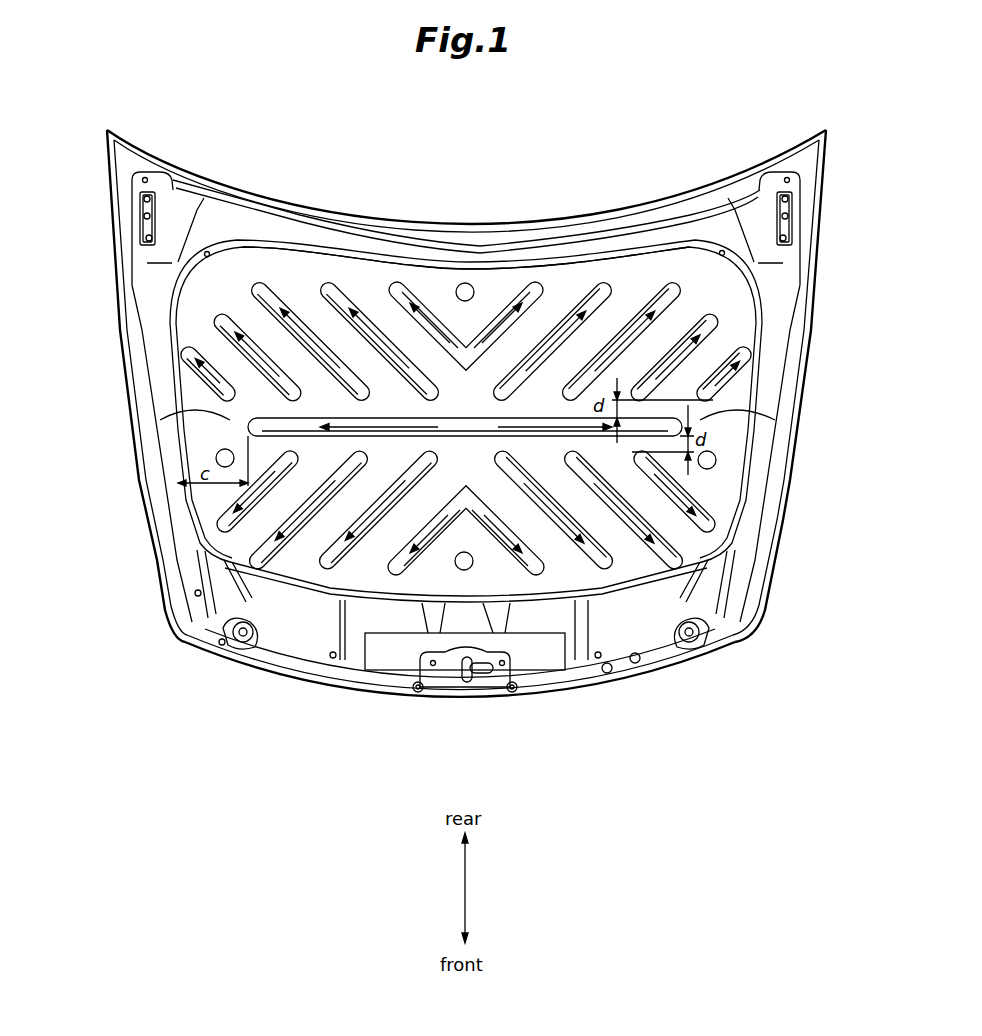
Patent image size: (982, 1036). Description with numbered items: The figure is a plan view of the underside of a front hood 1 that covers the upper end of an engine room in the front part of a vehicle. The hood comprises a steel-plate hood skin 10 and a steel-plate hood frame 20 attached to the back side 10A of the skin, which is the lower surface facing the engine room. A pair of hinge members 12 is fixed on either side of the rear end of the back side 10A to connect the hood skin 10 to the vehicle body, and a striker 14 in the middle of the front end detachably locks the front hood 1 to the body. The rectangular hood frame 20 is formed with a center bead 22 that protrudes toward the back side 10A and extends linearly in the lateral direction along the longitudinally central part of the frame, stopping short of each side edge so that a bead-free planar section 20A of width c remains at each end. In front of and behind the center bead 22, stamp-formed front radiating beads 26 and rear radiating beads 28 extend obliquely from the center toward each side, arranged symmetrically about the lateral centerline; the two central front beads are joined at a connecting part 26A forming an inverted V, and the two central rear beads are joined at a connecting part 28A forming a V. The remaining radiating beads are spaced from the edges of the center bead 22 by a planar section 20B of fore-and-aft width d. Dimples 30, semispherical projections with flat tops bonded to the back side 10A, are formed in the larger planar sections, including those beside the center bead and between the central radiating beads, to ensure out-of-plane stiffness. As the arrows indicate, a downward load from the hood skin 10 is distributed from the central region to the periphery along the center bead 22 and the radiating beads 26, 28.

The front hood 1 is at (427, 189).
The hood skin 10 is at (790, 306).
The back side 10A is at (755, 217).
The hinge member 12 is at (148, 227).
The striker 14 is at (473, 674).
The hood frame 20 is at (735, 465).
The planar section 20A is at (180, 411).
The planar section 20B is at (394, 455).
The center bead 22 is at (702, 390).
The front radiating bead 26 is at (466, 569).
The connecting part 26A is at (462, 487).
The rear radiating bead 28 is at (466, 283).
The connecting part 28A is at (453, 368).
The dimple 30 is at (456, 290).